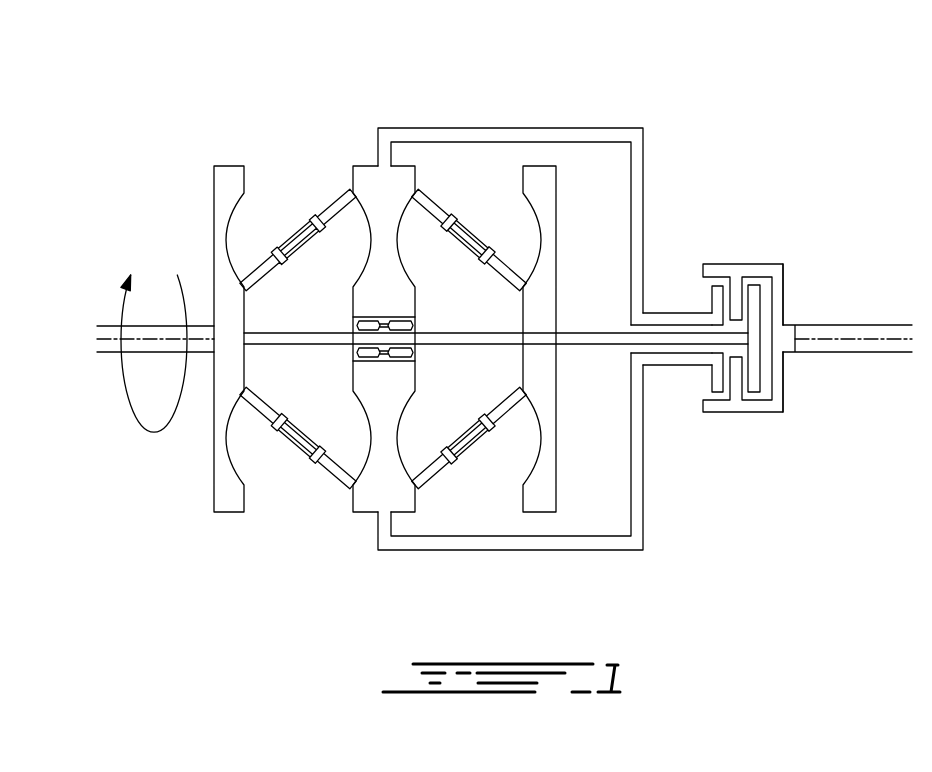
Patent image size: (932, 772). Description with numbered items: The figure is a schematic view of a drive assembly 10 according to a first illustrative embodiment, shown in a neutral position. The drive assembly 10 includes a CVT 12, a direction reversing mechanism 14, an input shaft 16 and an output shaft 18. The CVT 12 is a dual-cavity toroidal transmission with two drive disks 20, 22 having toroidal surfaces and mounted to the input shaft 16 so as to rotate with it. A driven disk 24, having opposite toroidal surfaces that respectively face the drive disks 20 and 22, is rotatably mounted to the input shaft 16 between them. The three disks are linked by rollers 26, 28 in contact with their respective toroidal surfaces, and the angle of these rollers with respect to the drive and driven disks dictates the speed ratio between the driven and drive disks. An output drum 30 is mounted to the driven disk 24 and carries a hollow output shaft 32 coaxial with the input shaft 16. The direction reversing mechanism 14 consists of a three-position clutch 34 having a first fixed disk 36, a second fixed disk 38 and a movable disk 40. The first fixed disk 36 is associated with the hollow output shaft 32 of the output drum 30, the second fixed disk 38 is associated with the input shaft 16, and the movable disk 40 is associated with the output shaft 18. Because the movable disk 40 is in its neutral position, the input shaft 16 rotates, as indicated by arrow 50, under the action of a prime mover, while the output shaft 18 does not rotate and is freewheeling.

The drive assembly 10 is at (212, 105).
The CVT 12 is at (387, 105).
The direction reversing mechanism 14 is at (752, 250).
The input shaft 16 is at (108, 355).
The output shaft 18 is at (857, 353).
The drive disk 20 is at (227, 499).
The drive disk 22 is at (542, 493).
The driven disk 24 is at (365, 499).
The rollers 26 is at (328, 473).
The rollers 28 is at (440, 473).
The output drum 30 is at (493, 135).
The hollow output shaft 32 is at (665, 364).
The three-position clutch 34 is at (787, 257).
The first fixed disk 36 is at (710, 378).
The second fixed disk 38 is at (753, 297).
The movable disk 40 is at (787, 295).
The arrow 50 is at (155, 432).